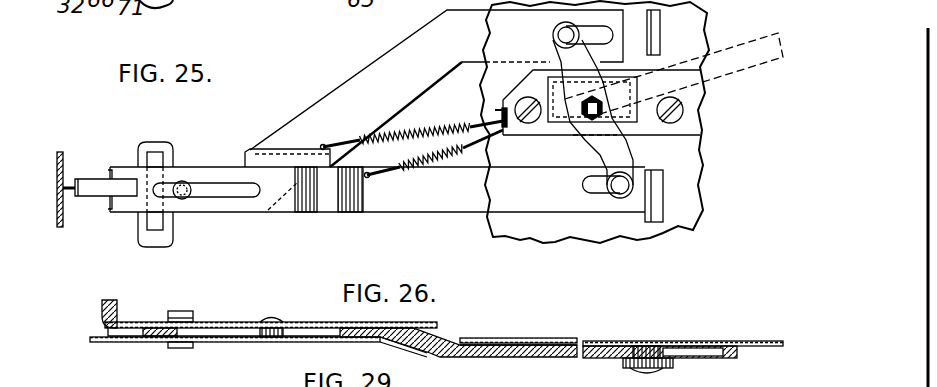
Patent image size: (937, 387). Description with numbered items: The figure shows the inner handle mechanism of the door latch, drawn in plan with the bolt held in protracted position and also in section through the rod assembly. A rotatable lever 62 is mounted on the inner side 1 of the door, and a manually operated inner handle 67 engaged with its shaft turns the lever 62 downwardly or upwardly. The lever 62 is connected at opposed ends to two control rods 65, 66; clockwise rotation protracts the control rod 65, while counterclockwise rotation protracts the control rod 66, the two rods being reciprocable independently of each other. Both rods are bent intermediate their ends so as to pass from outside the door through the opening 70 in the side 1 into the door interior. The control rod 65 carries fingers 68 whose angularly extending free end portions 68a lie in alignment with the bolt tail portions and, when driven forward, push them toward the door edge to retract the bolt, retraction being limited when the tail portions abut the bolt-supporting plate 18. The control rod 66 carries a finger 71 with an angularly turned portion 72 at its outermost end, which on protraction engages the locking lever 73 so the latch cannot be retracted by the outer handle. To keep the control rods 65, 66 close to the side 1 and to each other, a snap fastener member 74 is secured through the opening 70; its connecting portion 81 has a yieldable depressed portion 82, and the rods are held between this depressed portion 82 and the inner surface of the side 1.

In FIG. 25, the inner side of the door 1 is at (693, 163).
In FIG. 26, the inner side of the door 1 is at (522, 341).
In FIG. 25, the bolt-supporting plate 18 is at (57, 165).
In FIG. 26, the rotatable lever 62 is at (672, 363).
In FIG. 25, the control rod 65 is at (394, 205).
In FIG. 26, the control rod 65 is at (530, 352).
In FIG. 25, the control rod 66 is at (327, 120).
In FIG. 26, the control rod 66 is at (423, 327).
In FIG. 25, the inner handle 67 is at (760, 66).
In FIG. 25, the fingers 68 is at (112, 212).
In FIG. 26, the fingers 68 is at (118, 329).
In FIG. 26, the free end portions 68a is at (108, 300).
In FIG. 26, the opening 70 is at (455, 340).
In FIG. 25, the finger 71 is at (87, 185).
In FIG. 26, the finger 71 is at (122, 323).
In FIG. 26, the angularly turned portion 72 is at (102, 315).
In FIG. 25, the locking lever 73 is at (68, 183).
In FIG. 25, the fastener member 74 is at (165, 160).
In FIG. 26, the fastener member 74 is at (192, 346).
In FIG. 26, the connecting portion 81 is at (187, 310).
In FIG. 26, the yieldable depressed portion 82 is at (192, 313).